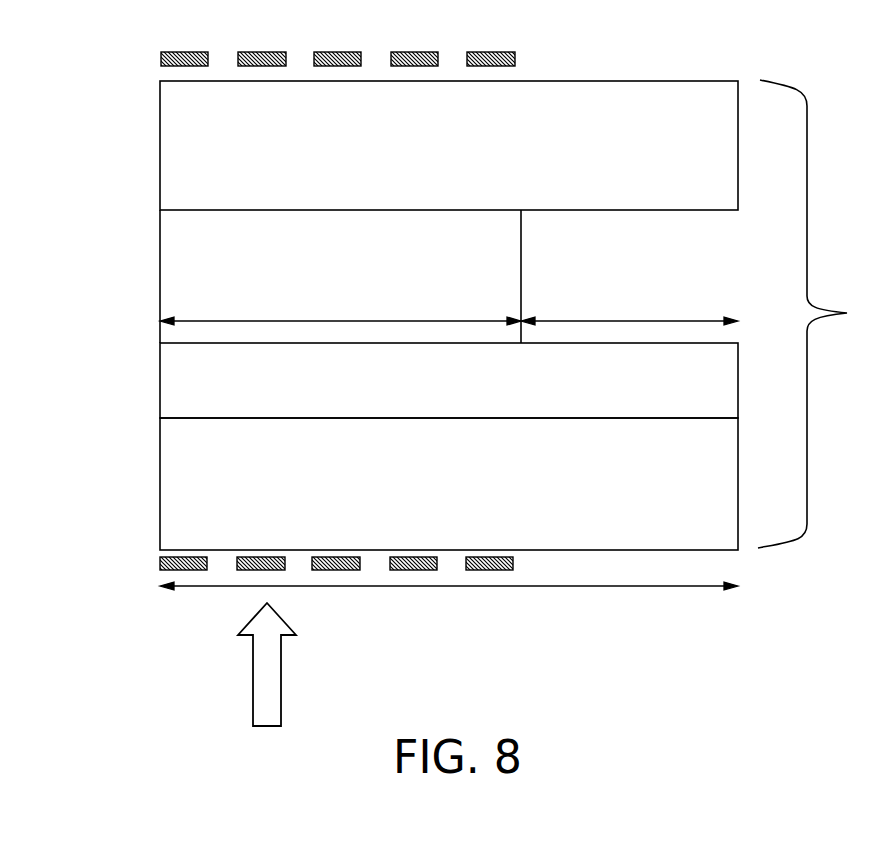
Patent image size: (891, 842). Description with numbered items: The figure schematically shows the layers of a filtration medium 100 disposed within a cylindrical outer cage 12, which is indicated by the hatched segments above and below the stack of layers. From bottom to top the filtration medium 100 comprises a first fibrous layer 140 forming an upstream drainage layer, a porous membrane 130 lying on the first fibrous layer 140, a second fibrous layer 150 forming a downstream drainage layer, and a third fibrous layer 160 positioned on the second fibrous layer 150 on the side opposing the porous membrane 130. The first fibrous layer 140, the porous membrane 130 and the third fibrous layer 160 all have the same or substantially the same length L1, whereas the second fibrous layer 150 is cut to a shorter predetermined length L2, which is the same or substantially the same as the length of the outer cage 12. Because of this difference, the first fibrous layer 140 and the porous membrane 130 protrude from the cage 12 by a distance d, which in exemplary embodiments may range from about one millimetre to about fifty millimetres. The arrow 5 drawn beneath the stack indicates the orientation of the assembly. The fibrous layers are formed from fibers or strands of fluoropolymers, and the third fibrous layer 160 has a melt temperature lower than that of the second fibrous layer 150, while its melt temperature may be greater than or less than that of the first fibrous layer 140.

The filtration medium 100 is at (470, 315).
The third fibrous layer 160 is at (159, 167).
The second fibrous layer 150 is at (159, 274).
The porous membrane 130 is at (159, 392).
The first fibrous layer 140 is at (159, 487).
The outer cage 12 is at (515, 59).
The light propagation direction 5 is at (281, 686).
The length of first fibrous layer, porous membrane and third fibrous layer L1 is at (525, 588).
The length of second fibrous layer L2 is at (400, 319).
The protrusion distance d is at (668, 319).